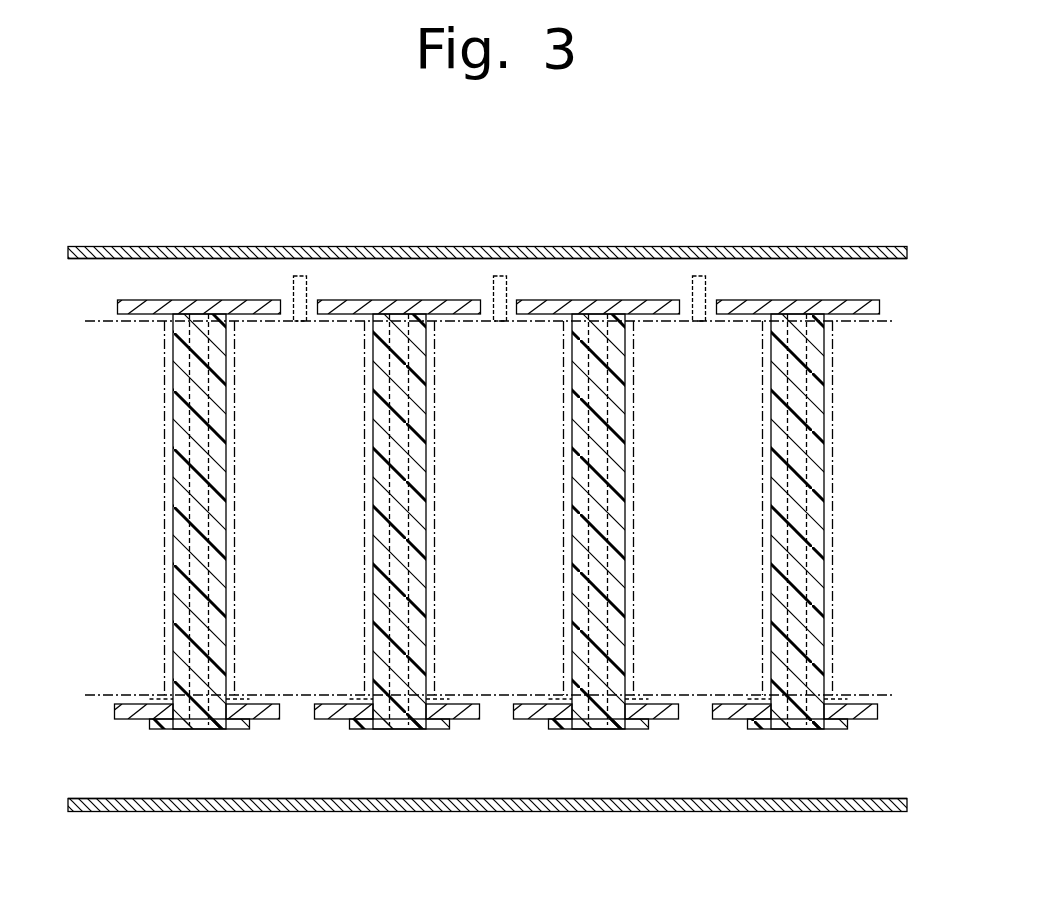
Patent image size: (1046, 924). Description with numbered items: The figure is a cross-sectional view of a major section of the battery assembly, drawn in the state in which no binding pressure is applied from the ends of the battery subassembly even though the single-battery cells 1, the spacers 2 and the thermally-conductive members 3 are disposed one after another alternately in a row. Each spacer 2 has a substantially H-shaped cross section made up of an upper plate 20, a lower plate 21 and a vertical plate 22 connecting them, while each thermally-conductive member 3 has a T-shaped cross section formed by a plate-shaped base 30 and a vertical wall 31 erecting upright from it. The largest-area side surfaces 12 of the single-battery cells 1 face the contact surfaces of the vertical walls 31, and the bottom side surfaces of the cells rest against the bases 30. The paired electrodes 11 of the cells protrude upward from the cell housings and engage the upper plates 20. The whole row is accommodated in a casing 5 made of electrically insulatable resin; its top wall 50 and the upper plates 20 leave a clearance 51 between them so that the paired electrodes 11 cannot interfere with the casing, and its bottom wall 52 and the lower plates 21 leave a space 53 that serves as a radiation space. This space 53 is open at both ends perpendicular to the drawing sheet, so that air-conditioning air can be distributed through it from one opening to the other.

The single-battery cell 1 is at (738, 348).
The spacer 2 is at (857, 300).
The thermally-conductive member 3 is at (826, 521).
The casing 5 is at (332, 246).
The paired electrodes 11 is at (293, 282).
The largest-area side surface 12 is at (849, 521).
The upper plate 20 is at (593, 300).
The lower plate 21 is at (858, 721).
The vertical plate 22 is at (188, 523).
The base 30 is at (794, 730).
The vertical wall 31 is at (766, 634).
The top wall 50 is at (438, 259).
The clearance 51 is at (181, 292).
The bottom wall 52 is at (428, 798).
The space 53 is at (310, 775).